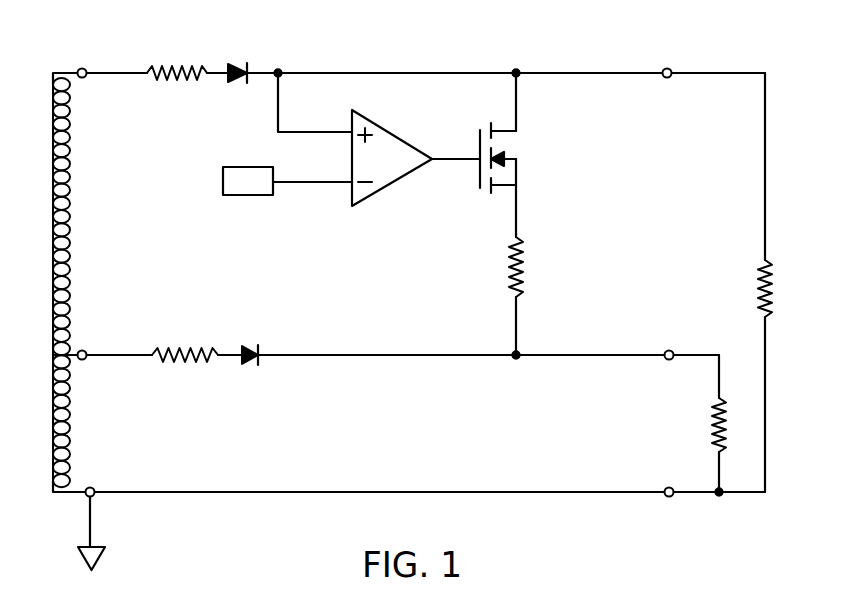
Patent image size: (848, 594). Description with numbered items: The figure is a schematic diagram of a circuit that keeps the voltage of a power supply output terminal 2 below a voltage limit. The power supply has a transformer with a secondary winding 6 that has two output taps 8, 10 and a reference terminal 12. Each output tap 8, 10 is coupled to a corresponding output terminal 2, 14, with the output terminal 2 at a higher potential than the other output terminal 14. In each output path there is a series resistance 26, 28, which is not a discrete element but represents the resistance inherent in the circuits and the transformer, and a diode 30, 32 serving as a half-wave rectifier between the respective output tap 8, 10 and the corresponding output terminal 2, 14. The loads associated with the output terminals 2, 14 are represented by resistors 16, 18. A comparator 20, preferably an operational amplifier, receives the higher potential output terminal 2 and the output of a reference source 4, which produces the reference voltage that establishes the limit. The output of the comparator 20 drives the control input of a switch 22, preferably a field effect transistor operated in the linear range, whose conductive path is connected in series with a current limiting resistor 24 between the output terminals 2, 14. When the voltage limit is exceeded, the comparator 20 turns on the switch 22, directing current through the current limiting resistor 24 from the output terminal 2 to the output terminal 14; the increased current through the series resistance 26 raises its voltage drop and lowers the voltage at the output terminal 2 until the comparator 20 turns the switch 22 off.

The power supply output terminal 2 is at (666, 68).
The reference source 4 is at (236, 196).
The secondary winding 6 is at (72, 210).
The output tap 8 is at (85, 69).
The output tap 10 is at (85, 361).
The reference terminal 12 is at (93, 488).
The output terminal 14 is at (668, 361).
The resistor 16 is at (757, 288).
The resistor 18 is at (712, 425).
The comparator 20 is at (409, 112).
The switch 22 is at (489, 190).
The current limiting resistor 24 is at (512, 263).
The series resistance 26 is at (178, 86).
The series resistance 28 is at (176, 351).
The diode 30 is at (238, 67).
The diode 32 is at (246, 366).